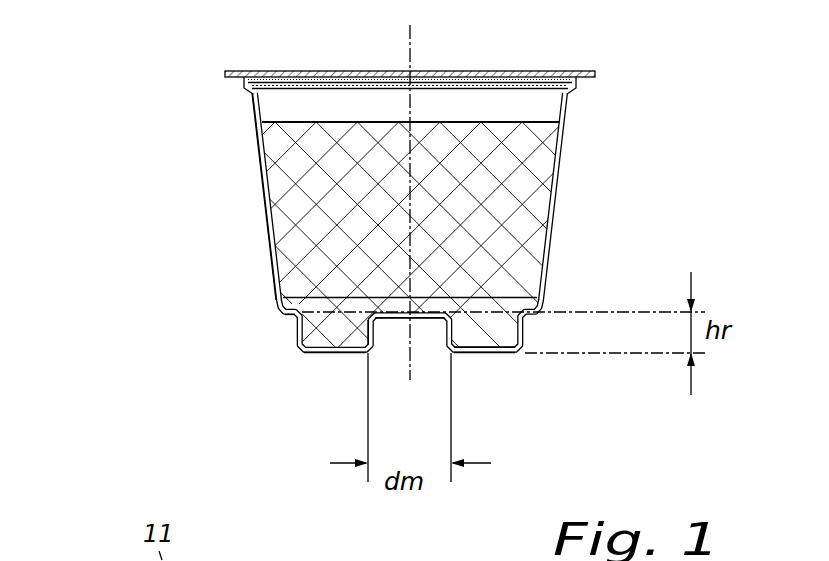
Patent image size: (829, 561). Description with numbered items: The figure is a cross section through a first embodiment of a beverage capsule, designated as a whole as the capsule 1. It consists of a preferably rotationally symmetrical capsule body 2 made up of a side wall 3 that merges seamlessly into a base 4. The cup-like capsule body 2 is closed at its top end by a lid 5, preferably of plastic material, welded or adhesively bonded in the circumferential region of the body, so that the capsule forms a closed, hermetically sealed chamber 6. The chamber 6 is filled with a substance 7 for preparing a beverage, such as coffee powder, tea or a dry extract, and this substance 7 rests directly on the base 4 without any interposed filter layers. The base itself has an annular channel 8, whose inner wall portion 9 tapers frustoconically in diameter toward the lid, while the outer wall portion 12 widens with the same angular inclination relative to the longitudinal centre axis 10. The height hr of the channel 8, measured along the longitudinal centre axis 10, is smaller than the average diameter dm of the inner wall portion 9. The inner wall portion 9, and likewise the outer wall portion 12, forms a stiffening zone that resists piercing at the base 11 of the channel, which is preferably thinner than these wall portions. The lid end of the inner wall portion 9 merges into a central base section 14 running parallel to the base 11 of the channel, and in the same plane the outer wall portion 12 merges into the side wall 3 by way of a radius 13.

The capsule 1 is at (130, 132).
The capsule body 2 is at (582, 221).
The side wall 3 is at (262, 172).
The base 4 is at (436, 366).
The lid 5 is at (302, 70).
The chamber 6 is at (282, 113).
The substance 7 is at (540, 162).
The annular channel 8 is at (500, 330).
The inner wall portion 9 is at (360, 337).
The longitudinal centre axis 10 is at (410, 33).
The base of the channel 11 is at (485, 354).
The outer wall portion 12 is at (290, 333).
The radius 13 is at (278, 310).
The central base section 14 is at (432, 310).